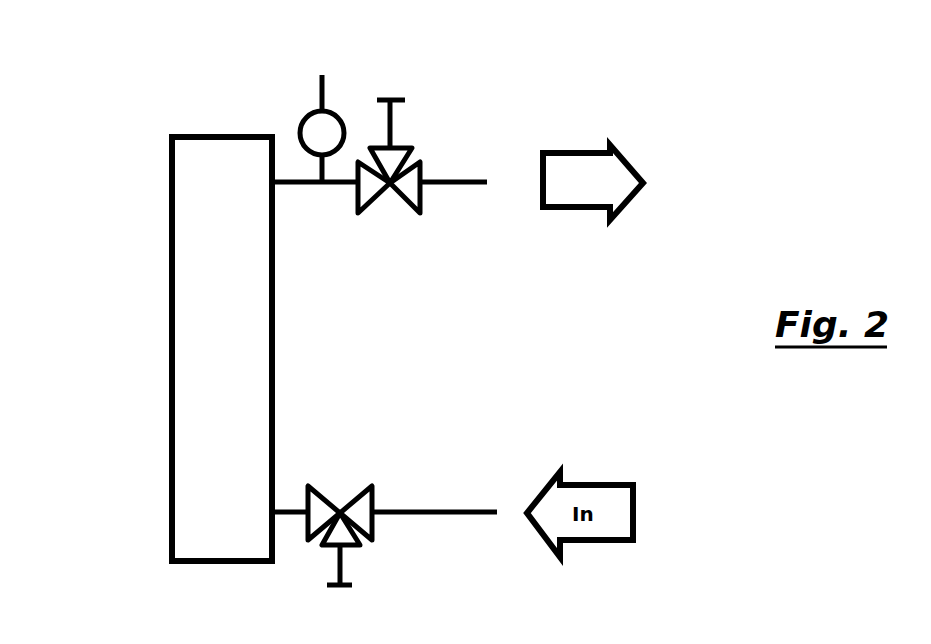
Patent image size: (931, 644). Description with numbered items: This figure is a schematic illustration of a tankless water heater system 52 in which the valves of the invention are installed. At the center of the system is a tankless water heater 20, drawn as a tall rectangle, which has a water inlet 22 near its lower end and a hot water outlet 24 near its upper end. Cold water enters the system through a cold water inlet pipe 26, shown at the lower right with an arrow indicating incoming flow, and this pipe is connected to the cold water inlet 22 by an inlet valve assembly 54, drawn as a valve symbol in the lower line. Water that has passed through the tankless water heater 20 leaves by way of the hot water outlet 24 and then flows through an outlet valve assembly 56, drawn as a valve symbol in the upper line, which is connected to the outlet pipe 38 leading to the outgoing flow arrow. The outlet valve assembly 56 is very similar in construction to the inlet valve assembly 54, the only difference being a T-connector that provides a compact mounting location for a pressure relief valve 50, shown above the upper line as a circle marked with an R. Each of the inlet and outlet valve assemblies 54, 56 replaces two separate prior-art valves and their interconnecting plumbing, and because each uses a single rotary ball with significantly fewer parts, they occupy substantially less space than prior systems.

The tankless water heater 20 is at (170, 333).
The water inlet 22 is at (277, 503).
The hot water outlet 24 is at (285, 186).
The cold water inlet pipe 26 is at (423, 510).
The outlet pipe 38 is at (462, 190).
The pressure relief valve 50 is at (310, 113).
The tankless water heater system 52 is at (543, 107).
The inlet valve assembly 54 is at (386, 553).
The outlet valve assembly 56 is at (412, 150).